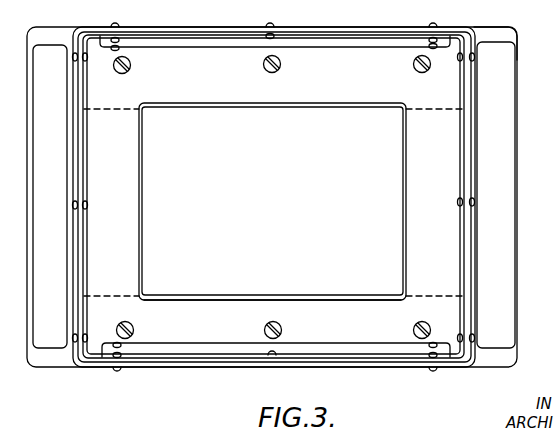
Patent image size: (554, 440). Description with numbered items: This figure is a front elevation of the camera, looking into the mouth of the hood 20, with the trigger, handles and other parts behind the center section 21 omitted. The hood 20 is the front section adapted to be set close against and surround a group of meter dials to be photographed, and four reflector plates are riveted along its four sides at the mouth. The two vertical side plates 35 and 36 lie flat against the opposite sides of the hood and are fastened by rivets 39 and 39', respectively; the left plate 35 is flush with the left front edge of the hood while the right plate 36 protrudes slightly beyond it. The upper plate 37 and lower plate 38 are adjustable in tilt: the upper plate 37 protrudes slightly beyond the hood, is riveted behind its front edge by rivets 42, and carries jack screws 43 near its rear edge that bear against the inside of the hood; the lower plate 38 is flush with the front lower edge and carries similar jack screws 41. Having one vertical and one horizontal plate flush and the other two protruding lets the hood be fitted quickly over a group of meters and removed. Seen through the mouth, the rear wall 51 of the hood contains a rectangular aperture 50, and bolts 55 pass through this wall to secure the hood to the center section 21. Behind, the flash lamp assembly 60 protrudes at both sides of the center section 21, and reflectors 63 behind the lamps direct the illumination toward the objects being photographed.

The hood 20 is at (214, 365).
The center section 21 is at (507, 38).
The reflector plate 35 is at (84, 188).
The reflector plate 36 is at (461, 185).
The reflector plate 37 is at (328, 46).
The reflector plate 38 is at (317, 350).
The rivets 39 is at (101, 197).
The rivets 39' is at (486, 197).
The jack screws 41 is at (435, 343).
The rivets 42 is at (268, 27).
The jack screws 43 is at (112, 50).
The rectangular aperture 50 is at (377, 132).
The rear wall 51 is at (260, 311).
The bolts 55 is at (272, 73).
The flash lamp assembly 60 is at (508, 132).
The reflectors 63 is at (292, 107).